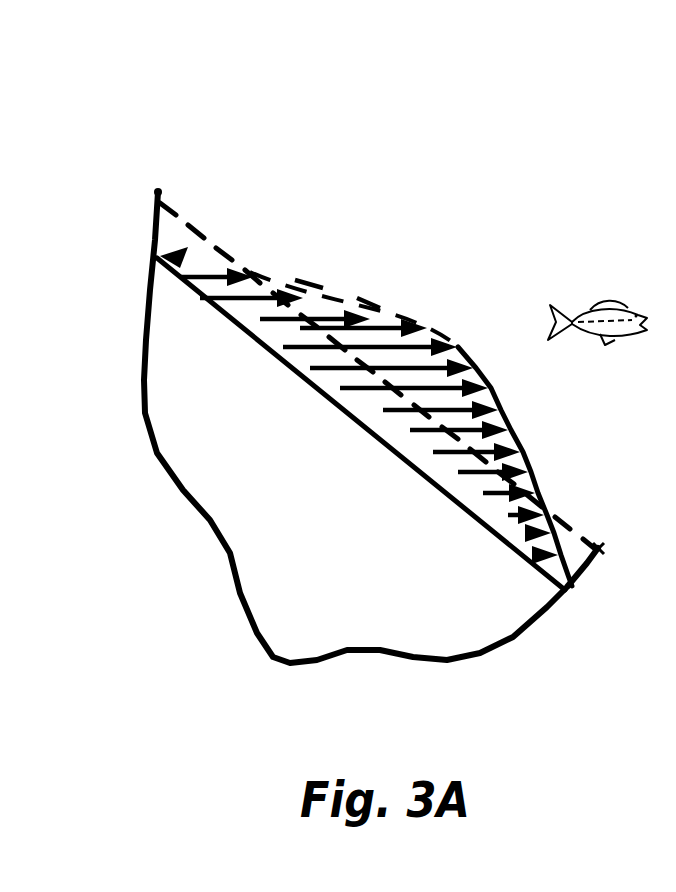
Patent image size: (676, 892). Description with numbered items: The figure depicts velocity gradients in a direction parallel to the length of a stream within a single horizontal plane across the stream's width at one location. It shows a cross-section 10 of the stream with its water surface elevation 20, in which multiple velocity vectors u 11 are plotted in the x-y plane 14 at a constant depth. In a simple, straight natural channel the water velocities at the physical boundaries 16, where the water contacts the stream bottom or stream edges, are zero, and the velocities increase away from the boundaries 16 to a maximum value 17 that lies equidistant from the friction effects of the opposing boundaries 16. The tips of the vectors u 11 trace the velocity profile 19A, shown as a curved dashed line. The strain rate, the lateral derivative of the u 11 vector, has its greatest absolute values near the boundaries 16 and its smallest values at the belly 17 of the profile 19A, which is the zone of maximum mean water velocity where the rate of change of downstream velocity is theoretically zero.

The cross-section 10 is at (318, 118).
The velocity vectors u 11 is at (293, 303).
The x-y plane 14 is at (335, 387).
The physical boundaries 16 is at (160, 193).
The maximum velocity value (belly) 17 is at (463, 347).
The velocity profile 19A is at (383, 310).
The water surface elevation 20 is at (192, 233).